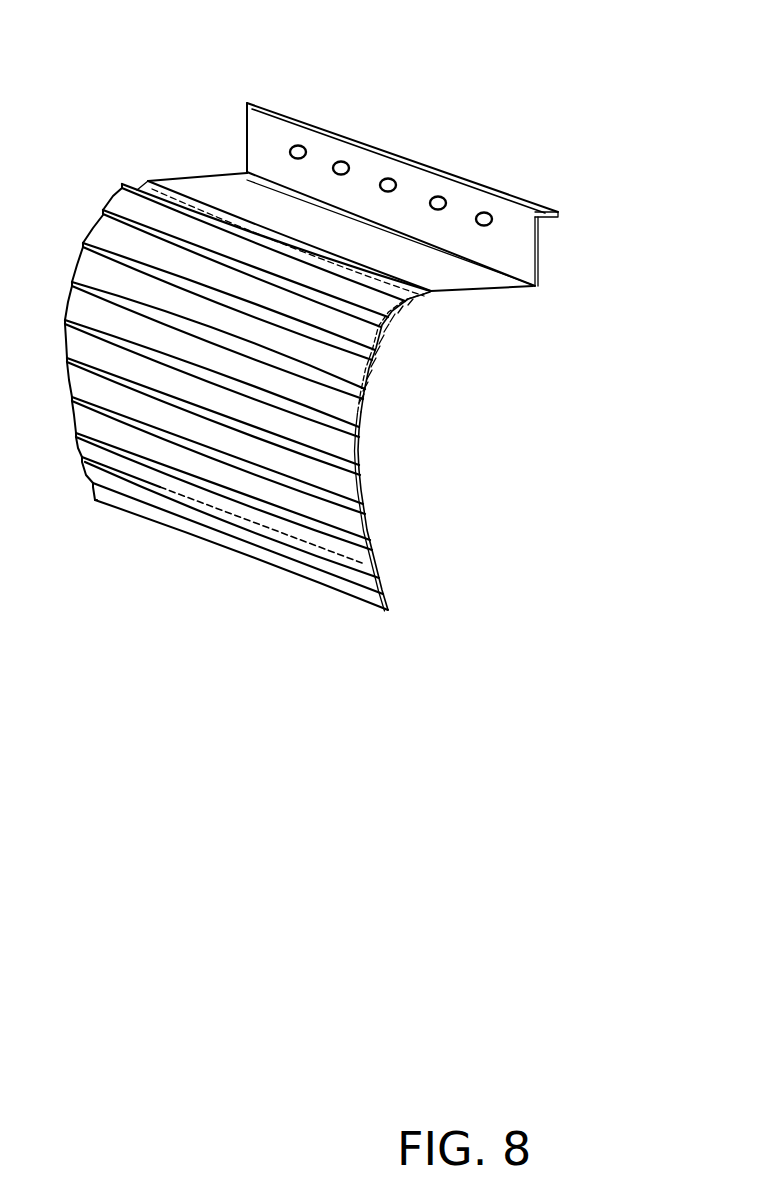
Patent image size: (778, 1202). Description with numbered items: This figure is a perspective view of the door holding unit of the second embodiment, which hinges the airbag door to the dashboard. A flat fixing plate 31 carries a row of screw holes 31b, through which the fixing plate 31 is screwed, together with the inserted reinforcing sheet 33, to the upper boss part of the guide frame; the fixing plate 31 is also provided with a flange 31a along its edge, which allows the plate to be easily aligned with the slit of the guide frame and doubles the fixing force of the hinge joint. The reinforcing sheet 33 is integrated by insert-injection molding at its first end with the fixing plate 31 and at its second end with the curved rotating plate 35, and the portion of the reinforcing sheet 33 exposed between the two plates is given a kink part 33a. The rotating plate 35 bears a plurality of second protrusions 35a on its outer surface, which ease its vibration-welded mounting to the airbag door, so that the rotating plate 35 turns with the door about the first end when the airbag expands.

The fixing plate 31 is at (517, 240).
The flange 31a is at (515, 198).
The screw holes 31b is at (485, 212).
The reinforcing sheet 33 is at (453, 277).
The kink part 33a is at (435, 295).
The rotating plate 35 is at (387, 350).
The second protrusions 35a is at (370, 540).